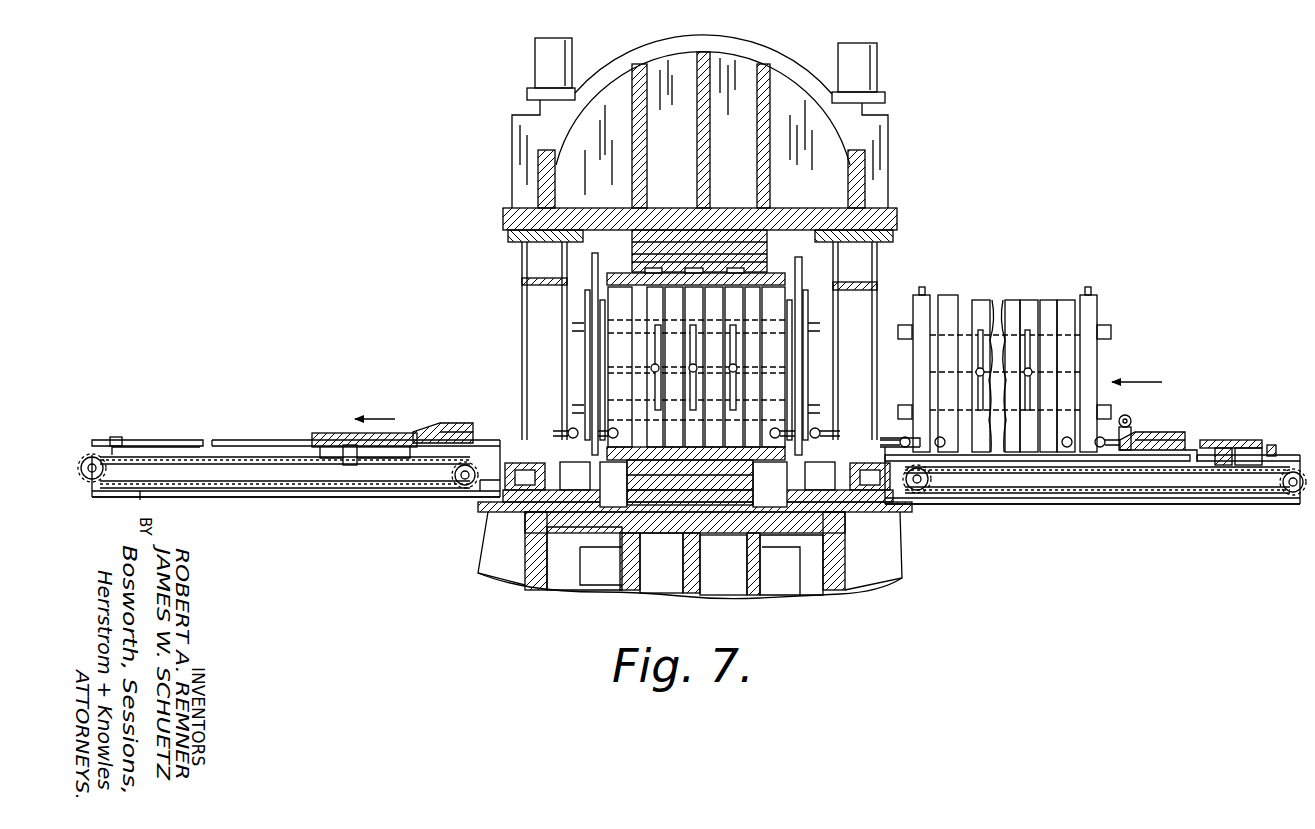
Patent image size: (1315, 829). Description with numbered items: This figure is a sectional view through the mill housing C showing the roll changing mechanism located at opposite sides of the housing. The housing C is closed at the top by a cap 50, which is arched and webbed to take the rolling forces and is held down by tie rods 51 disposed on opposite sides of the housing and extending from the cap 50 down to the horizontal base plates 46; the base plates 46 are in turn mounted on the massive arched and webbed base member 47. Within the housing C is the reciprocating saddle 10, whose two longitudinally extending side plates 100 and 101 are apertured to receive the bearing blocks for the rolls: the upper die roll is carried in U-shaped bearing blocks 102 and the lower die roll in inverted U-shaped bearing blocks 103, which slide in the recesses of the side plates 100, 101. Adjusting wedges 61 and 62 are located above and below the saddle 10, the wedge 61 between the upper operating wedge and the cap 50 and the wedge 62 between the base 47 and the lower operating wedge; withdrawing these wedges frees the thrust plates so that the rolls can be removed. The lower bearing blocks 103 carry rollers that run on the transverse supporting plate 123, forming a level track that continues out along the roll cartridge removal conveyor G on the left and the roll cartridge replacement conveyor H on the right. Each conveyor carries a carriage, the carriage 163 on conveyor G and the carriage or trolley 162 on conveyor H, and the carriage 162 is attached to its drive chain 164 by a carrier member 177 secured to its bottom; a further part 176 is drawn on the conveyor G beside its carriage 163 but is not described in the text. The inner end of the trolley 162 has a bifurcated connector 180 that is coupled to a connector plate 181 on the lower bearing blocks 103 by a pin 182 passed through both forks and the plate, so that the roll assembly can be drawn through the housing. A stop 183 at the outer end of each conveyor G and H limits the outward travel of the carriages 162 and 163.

The mill housing C is at (950, 63).
The cap 50 is at (742, 38).
The tie rods 51 is at (540, 60).
The side plate 100 is at (806, 262).
The side plate 101 is at (576, 263).
The U-shaped bearing blocks 102 is at (580, 300).
The adjusting wedge 61 is at (630, 237).
The saddle 10 is at (578, 344).
The inverted U-shaped bearing blocks 103 is at (582, 376).
The connector plate 181 is at (555, 431).
The bifurcated connector 180 is at (445, 426).
The pusher block 176 is at (343, 433).
The carriage 163 is at (417, 405).
The stop 183 is at (130, 418).
The drive chain 164 is at (135, 486).
The horizontal base plates 46 is at (492, 537).
The adjusting wedge 62 is at (668, 497).
The base member 47 is at (746, 573).
The transverse supporting plate 123 is at (742, 450).
The roll cartridge removal conveyor G is at (227, 390).
The roll cartridge replacement conveyor H is at (1242, 370).
The pin 182 is at (1132, 422).
The carriage 162 is at (1210, 440).
The carrier member 177 is at (1258, 455).